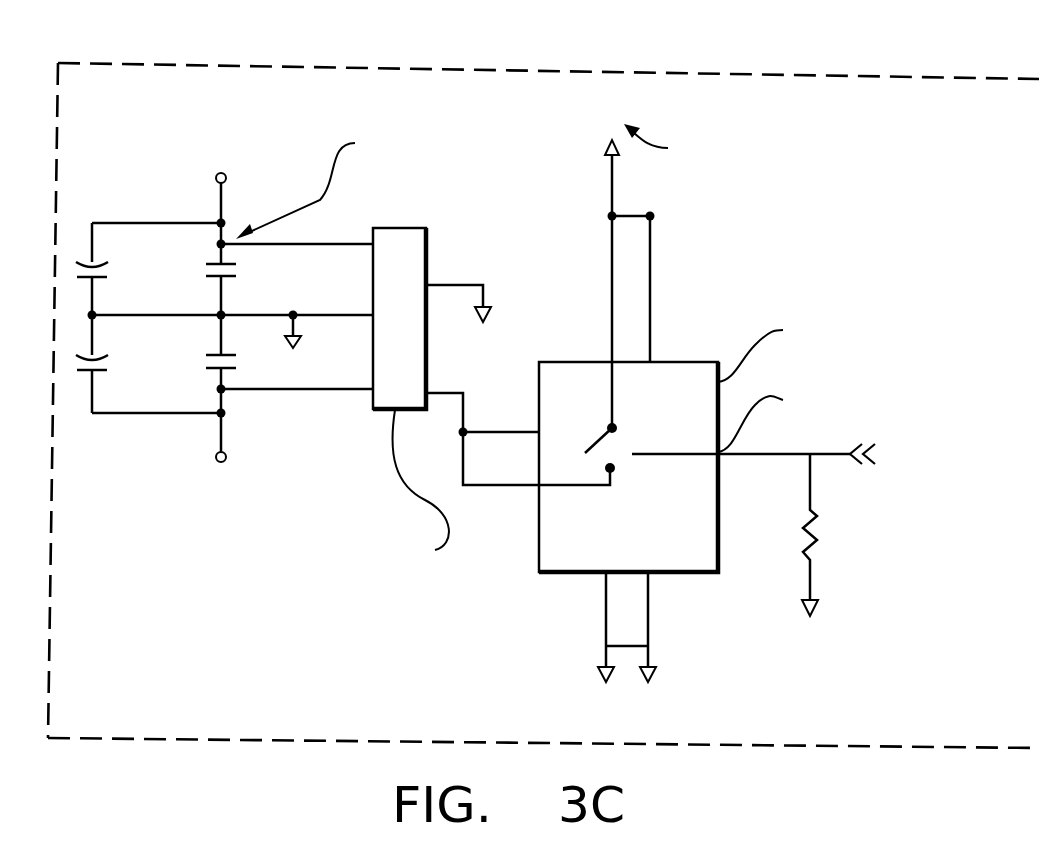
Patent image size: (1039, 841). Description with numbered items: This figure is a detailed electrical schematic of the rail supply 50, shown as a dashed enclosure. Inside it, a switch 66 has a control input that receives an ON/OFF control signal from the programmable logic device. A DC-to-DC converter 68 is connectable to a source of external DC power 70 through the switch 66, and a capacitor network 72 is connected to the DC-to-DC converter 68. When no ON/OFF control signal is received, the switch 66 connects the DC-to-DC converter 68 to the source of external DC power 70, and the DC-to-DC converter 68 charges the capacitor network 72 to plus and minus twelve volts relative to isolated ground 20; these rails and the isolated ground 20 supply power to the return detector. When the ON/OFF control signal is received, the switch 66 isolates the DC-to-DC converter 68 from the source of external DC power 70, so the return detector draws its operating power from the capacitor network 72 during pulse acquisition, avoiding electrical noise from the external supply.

The rail supply 50 is at (937, 78).
The capacitor network 72 is at (152, 217).
The isolated ground 20 is at (300, 345).
The DC-to-DC converter 68 is at (427, 330).
The source of external DC power 70 is at (601, 152).
The switch 66 is at (685, 573).